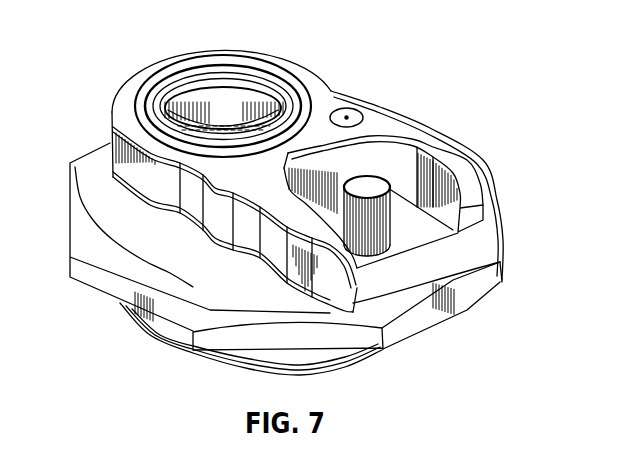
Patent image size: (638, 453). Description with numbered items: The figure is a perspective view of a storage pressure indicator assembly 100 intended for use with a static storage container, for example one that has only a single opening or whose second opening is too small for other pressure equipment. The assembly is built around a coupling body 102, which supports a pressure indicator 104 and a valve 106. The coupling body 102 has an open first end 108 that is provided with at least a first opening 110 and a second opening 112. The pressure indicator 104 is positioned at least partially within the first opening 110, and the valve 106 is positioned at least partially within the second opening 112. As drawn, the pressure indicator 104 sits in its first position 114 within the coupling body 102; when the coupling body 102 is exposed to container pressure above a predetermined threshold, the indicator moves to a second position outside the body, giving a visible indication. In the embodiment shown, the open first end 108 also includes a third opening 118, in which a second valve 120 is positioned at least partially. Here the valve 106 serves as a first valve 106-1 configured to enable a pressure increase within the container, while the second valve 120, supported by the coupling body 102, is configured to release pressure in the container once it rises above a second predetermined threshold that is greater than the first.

The storage pressure indicator assembly 100 is at (386, 37).
The coupling body 102 is at (237, 295).
The pressure indicator 104 is at (213, 103).
The valve 106 is at (387, 168).
The first valve 106-1 is at (503, 280).
The open first end 108 is at (183, 260).
The first opening 110 is at (140, 108).
The second opening 112 is at (405, 221).
The first position 114 is at (222, 118).
The third opening 118 is at (343, 110).
The second valve 120 is at (358, 110).